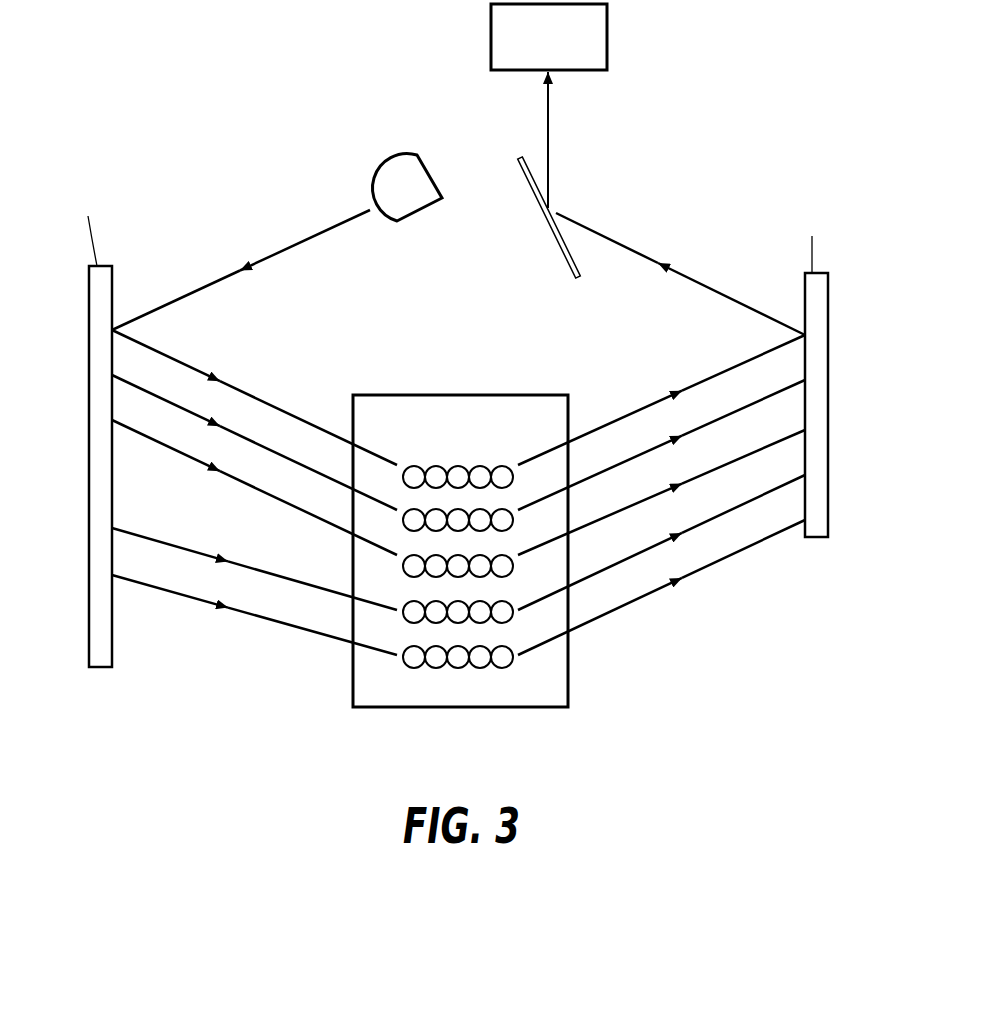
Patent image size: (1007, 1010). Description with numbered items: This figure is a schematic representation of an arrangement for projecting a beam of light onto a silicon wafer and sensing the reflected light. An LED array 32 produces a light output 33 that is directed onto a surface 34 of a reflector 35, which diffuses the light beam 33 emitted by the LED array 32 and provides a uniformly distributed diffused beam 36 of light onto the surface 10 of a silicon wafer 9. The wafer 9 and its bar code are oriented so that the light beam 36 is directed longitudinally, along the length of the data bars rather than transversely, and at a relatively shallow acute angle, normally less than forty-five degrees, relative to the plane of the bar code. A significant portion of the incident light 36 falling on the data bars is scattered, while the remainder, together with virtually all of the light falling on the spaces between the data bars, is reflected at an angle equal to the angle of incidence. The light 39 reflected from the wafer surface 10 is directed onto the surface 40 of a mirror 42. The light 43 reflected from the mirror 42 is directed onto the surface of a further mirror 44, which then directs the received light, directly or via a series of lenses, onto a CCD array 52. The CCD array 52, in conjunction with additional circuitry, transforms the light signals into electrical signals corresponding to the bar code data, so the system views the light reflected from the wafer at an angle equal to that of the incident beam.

The silicon wafer 9 is at (533, 395).
The surface of silicon wafer 10 is at (563, 676).
The LED array 32 is at (397, 165).
The light output 33 is at (218, 272).
The surface of reflector 34 is at (112, 296).
The reflector 35 is at (89, 383).
The diffused beam 36 is at (370, 450).
The reflected light 39 is at (618, 418).
The surface of mirror 40 is at (805, 522).
The mirror 42 is at (805, 294).
The light reflected from mirror 43 is at (620, 243).
The mirror 44 is at (555, 242).
The CCD array 52 is at (607, 31).